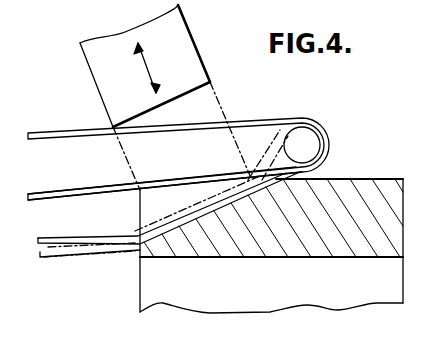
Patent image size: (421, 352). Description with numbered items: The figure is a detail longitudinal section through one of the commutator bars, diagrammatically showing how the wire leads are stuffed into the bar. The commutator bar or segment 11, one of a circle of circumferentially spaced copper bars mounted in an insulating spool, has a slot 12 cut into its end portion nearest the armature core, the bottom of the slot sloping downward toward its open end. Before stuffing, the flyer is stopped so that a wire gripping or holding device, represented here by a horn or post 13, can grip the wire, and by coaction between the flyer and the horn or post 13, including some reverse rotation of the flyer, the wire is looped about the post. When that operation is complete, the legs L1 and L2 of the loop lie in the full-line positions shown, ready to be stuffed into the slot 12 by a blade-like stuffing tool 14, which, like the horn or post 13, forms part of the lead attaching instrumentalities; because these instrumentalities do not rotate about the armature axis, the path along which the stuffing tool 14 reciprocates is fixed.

The commutator bar or segment 11 is at (368, 178).
The slot 12 is at (163, 205).
The horn or post 13 is at (306, 135).
The blade-like stuffing tool 14 is at (180, 38).
The leg of the loop L1 is at (80, 133).
The leg of the loop L2 is at (98, 187).